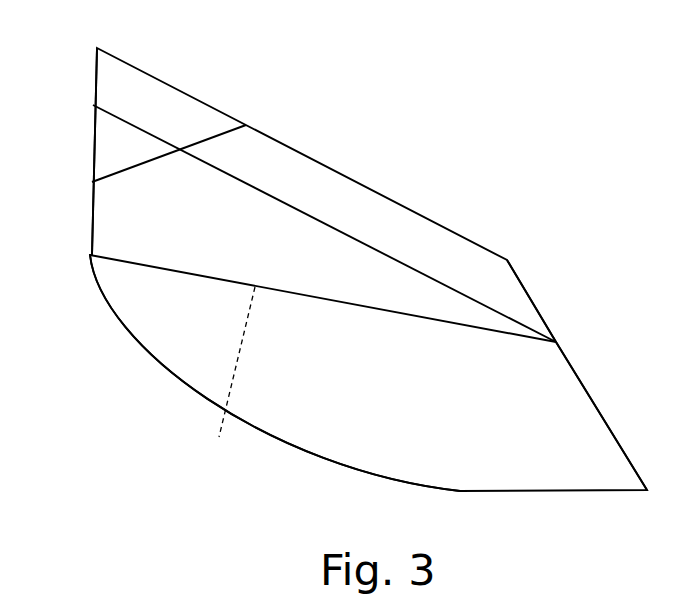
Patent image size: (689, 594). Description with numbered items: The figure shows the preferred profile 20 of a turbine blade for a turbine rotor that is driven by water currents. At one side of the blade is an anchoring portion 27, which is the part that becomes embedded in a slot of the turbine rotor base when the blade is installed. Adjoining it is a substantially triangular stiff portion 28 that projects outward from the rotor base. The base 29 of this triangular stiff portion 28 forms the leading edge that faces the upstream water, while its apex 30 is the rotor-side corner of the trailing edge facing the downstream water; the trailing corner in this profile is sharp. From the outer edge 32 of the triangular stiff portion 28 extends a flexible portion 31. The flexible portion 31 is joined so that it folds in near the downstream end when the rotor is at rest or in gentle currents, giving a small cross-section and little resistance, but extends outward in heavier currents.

The profile 20 is at (398, 124).
The anchoring portion 27 is at (324, 196).
The triangular stiff portion 28 is at (85, 103).
The base 29 is at (228, 136).
The apex 30 is at (575, 301).
The flexible portion 31 is at (347, 372).
The outer edge 32 is at (214, 395).